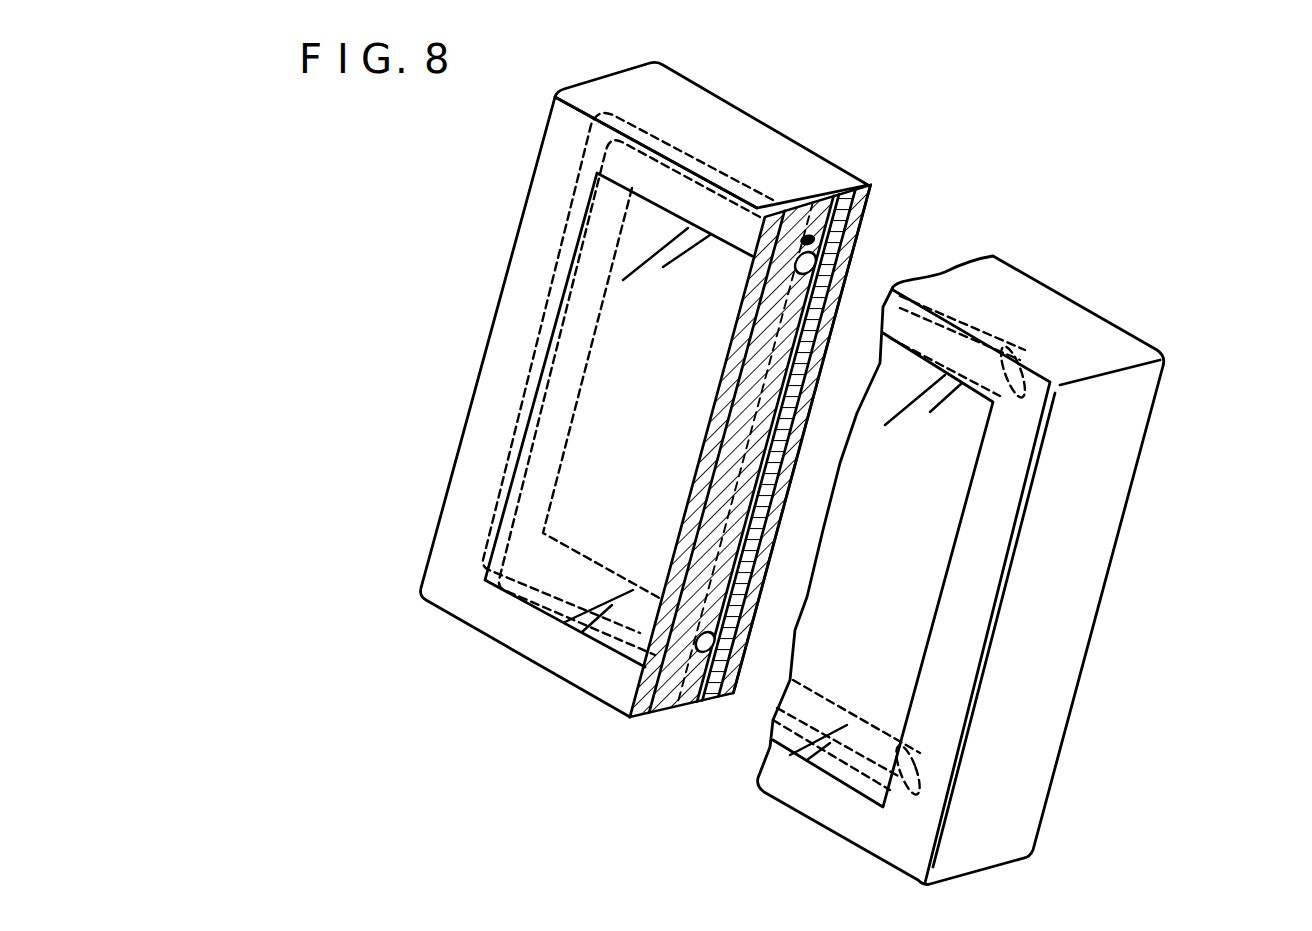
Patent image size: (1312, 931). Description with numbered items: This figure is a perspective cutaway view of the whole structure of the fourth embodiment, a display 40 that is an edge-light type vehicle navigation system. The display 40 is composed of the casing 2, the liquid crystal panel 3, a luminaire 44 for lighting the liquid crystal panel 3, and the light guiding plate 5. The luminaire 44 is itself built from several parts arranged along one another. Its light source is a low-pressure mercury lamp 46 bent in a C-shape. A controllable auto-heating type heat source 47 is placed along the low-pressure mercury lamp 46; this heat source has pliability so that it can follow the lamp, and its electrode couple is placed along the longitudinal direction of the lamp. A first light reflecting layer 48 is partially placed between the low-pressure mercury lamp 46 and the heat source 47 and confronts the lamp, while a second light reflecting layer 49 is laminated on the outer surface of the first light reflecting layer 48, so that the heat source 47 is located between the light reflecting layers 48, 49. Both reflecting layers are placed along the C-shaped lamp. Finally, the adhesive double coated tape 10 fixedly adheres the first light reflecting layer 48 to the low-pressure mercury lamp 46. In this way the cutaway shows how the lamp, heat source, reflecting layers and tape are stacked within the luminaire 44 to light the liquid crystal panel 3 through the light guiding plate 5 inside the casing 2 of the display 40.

The casing 2 is at (805, 173).
The liquid crystal panel 3 is at (587, 473).
The light guiding plate 5 is at (838, 328).
The adhesive double coated tape 10 is at (717, 697).
The display 40 is at (1244, 216).
The luminaire 44 is at (651, 796).
The low-pressure mercury lamp 46 is at (592, 352).
The controllable auto-heating type heat source 47 is at (683, 147).
The first light reflecting layer 48 is at (860, 233).
The second light reflecting layer 49 is at (862, 185).